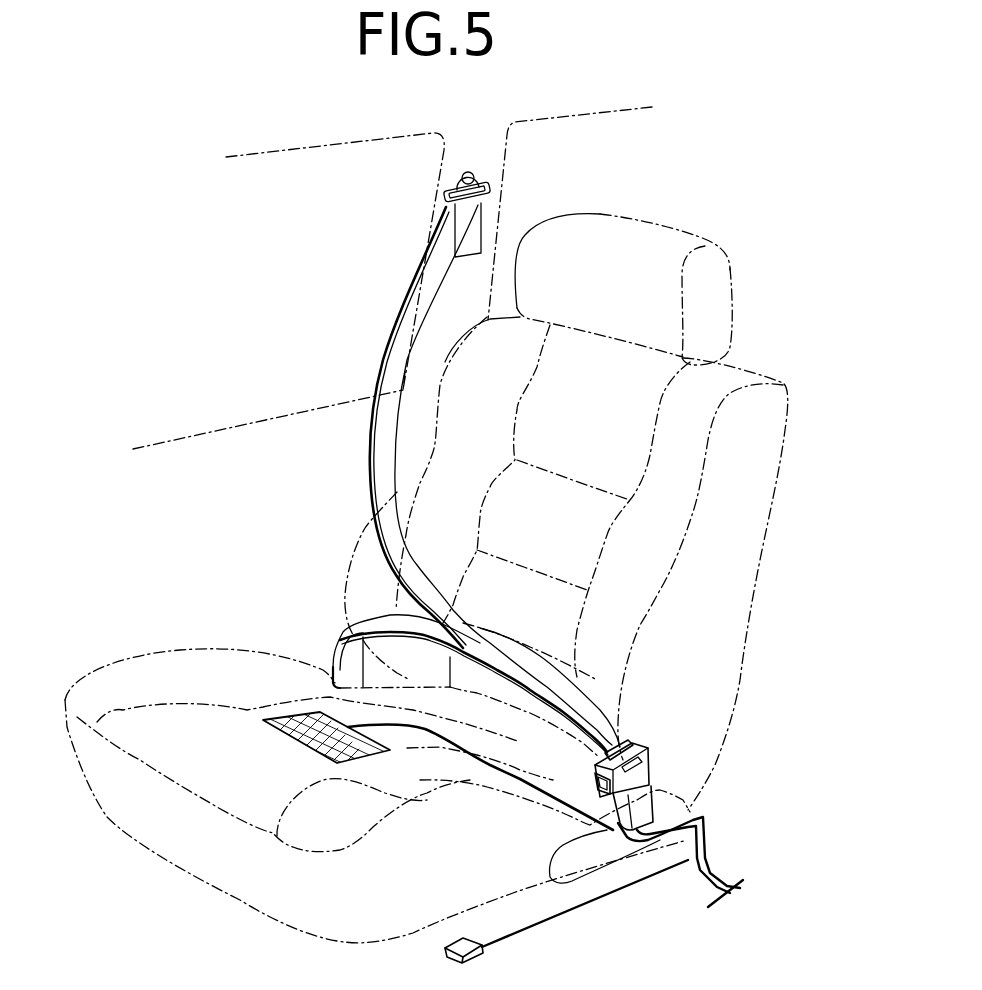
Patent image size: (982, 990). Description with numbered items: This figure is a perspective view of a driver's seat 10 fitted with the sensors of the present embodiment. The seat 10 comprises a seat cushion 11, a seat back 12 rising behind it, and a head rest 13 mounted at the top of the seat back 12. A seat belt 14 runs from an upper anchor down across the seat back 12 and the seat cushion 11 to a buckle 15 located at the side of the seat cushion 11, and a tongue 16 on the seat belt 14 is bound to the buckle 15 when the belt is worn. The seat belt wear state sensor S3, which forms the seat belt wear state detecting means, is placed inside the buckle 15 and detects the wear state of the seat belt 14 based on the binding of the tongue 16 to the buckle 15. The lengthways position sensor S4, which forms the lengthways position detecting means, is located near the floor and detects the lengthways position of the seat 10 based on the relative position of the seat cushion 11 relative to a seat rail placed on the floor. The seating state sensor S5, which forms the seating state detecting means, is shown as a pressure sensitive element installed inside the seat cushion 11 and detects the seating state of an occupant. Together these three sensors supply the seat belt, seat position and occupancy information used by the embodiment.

The driver's seat 10 is at (265, 652).
The seat cushion 11 is at (188, 663).
The seat back 12 is at (722, 572).
The head rest 13 is at (660, 226).
The seat belt 14 is at (423, 560).
The buckle 15 is at (642, 775).
The tongue 16 is at (630, 742).
The seat belt wear state sensor S3 is at (597, 782).
The lengthways position sensor S4 is at (462, 938).
The seating state sensor S5 is at (303, 738).